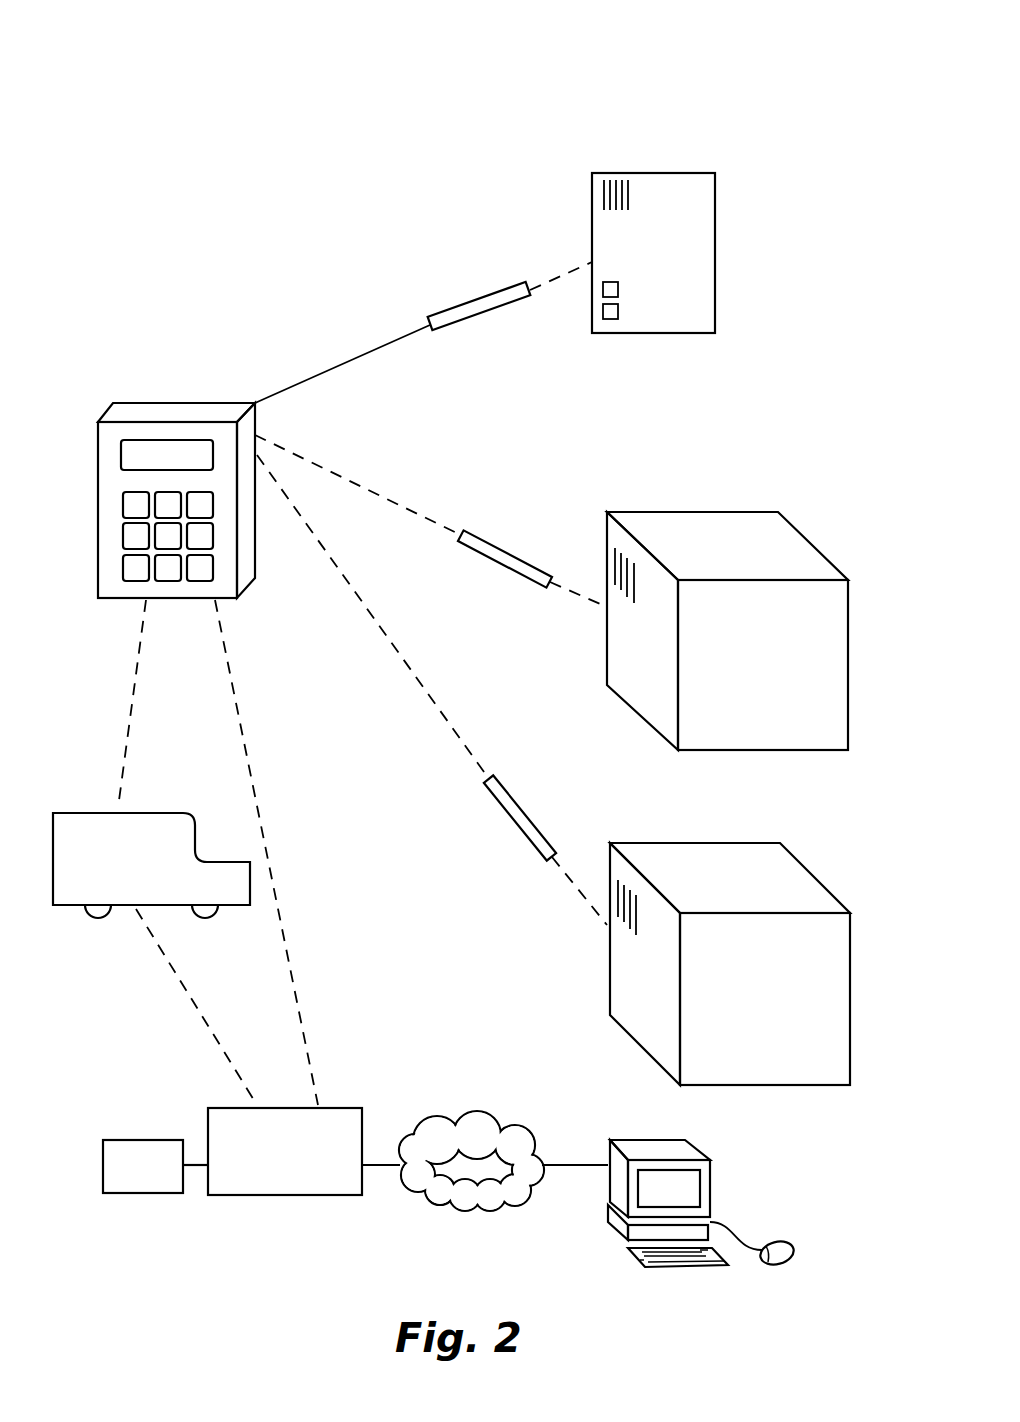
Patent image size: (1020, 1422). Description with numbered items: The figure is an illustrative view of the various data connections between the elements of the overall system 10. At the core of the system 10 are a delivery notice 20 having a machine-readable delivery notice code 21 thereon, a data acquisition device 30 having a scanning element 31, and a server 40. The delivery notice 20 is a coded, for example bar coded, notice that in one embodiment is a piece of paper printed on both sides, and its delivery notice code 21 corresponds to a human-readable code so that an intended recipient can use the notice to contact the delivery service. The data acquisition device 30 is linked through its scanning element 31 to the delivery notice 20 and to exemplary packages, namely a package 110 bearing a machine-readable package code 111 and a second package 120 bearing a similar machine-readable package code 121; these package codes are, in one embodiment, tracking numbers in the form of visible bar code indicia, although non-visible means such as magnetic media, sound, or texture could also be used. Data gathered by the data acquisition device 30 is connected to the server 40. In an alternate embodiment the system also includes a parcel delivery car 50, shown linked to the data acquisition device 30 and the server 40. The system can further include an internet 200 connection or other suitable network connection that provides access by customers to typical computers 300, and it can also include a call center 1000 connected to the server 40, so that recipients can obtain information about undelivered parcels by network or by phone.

The overall system 10 is at (712, 63).
The delivery notice 20 is at (740, 178).
The delivery notice code 21 is at (622, 180).
The data acquisition device 30 is at (146, 394).
The scanning element 31 is at (481, 282).
The server 40 is at (330, 1118).
The parcel delivery car 50 is at (103, 832).
The package 110 is at (807, 488).
The package code 111 is at (623, 607).
The package 120 is at (814, 846).
The package code 121 is at (626, 934).
The internet 200 is at (512, 1133).
The computers 300 is at (734, 1169).
The call center 1000 is at (137, 1150).